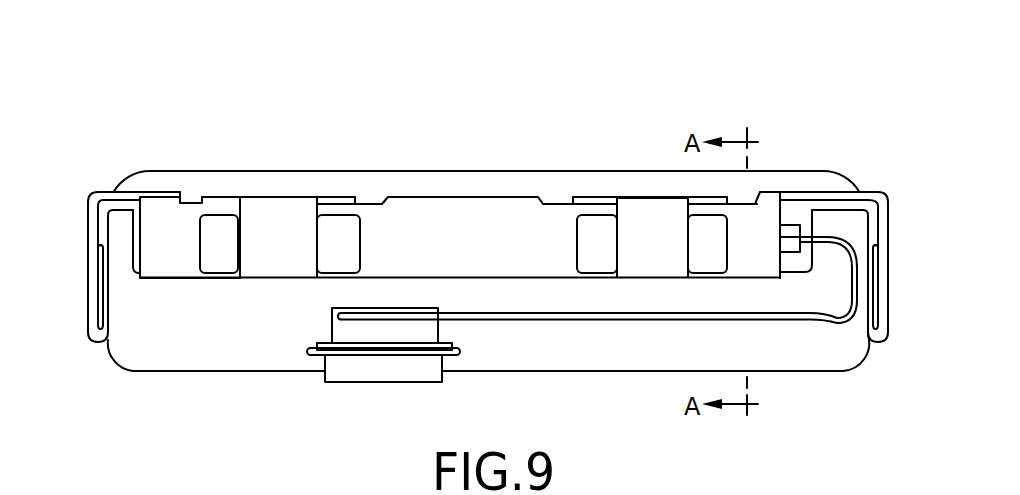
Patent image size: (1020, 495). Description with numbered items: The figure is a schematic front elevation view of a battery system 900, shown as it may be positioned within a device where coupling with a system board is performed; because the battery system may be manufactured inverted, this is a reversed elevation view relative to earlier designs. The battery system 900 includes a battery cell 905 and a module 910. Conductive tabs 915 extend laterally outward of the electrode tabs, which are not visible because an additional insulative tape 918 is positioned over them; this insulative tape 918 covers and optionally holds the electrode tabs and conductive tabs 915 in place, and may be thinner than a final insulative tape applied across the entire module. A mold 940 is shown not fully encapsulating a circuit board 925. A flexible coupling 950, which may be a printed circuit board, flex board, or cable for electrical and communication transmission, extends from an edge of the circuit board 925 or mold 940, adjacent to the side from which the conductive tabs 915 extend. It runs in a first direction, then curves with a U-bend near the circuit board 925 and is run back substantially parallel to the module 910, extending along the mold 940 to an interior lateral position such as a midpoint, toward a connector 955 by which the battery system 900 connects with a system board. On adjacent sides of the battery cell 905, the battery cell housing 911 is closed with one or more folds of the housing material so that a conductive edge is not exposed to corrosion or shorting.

The battery system 900 is at (120, 95).
The battery cell 905 is at (152, 372).
The module 910 is at (415, 198).
The battery cell housing 911 is at (103, 198).
The conductive tabs 915 is at (210, 220).
The insulative tape 918 is at (280, 200).
The circuit board 925 is at (795, 230).
The mold 940 is at (505, 200).
The flexible coupling 950 is at (840, 323).
The connector 955 is at (333, 382).